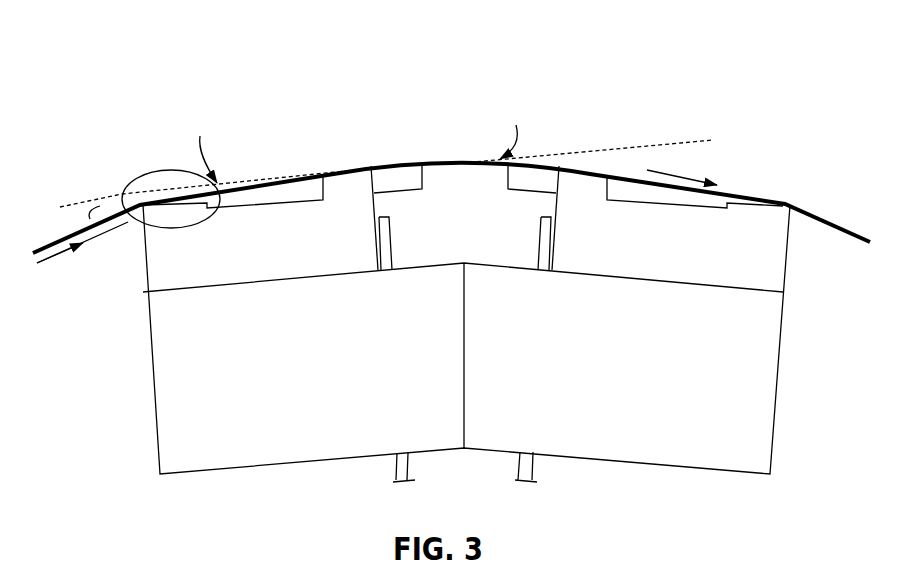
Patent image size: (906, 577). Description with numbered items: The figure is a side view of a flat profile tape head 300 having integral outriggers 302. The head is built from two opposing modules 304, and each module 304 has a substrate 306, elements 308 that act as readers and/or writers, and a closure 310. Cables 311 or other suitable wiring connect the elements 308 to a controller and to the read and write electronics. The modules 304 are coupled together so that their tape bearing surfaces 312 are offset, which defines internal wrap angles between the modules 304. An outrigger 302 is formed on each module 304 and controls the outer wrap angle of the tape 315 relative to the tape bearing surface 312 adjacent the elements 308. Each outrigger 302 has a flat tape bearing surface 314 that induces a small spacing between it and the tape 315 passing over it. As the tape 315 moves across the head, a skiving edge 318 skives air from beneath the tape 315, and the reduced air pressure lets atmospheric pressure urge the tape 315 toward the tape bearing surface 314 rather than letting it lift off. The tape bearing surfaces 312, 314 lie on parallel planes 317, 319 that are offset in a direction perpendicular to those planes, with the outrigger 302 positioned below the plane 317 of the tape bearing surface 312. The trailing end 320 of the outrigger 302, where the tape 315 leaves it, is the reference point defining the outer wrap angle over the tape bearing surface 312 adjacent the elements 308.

The flat profile tape head 300 is at (250, 136).
The outrigger 302 is at (187, 175).
The module 304 is at (150, 362).
The substrate 306 is at (143, 292).
The elements 308 is at (370, 167).
The closure 310 is at (505, 185).
The cables 311 is at (389, 227).
The tape bearing surface 312 is at (352, 167).
The flat tape bearing surface 314 is at (165, 195).
The tape 315 is at (835, 226).
The plane 317 is at (692, 140).
The skiving edge 318 is at (133, 213).
The plane 319 is at (100, 203).
The trailing end 320 is at (213, 207).